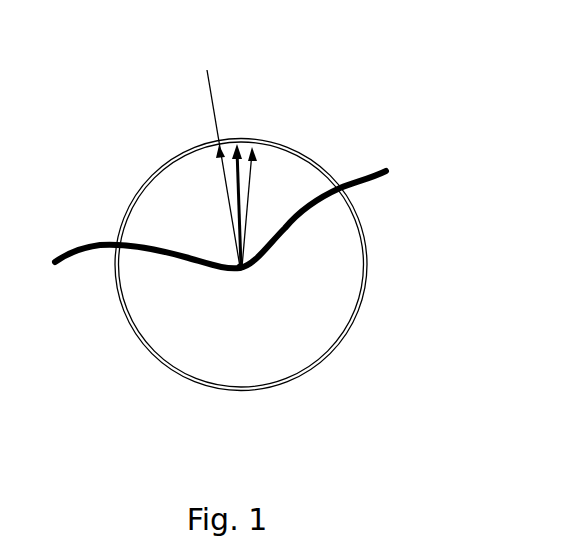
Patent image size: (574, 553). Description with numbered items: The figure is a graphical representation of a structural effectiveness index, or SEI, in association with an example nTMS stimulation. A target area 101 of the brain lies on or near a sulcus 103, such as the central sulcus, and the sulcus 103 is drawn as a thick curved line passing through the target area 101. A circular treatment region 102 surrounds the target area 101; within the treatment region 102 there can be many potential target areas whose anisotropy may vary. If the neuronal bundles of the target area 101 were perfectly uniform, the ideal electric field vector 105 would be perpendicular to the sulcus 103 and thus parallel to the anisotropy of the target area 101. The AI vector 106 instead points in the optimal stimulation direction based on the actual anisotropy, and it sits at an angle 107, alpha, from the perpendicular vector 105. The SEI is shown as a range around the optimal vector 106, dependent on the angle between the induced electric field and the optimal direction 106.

The target area 101 is at (228, 272).
The treatment region 102 is at (368, 282).
The sulcus 103 is at (386, 171).
The electric field vector 105 is at (252, 194).
The AI vector 106 is at (229, 206).
The angle 107 is at (250, 150).